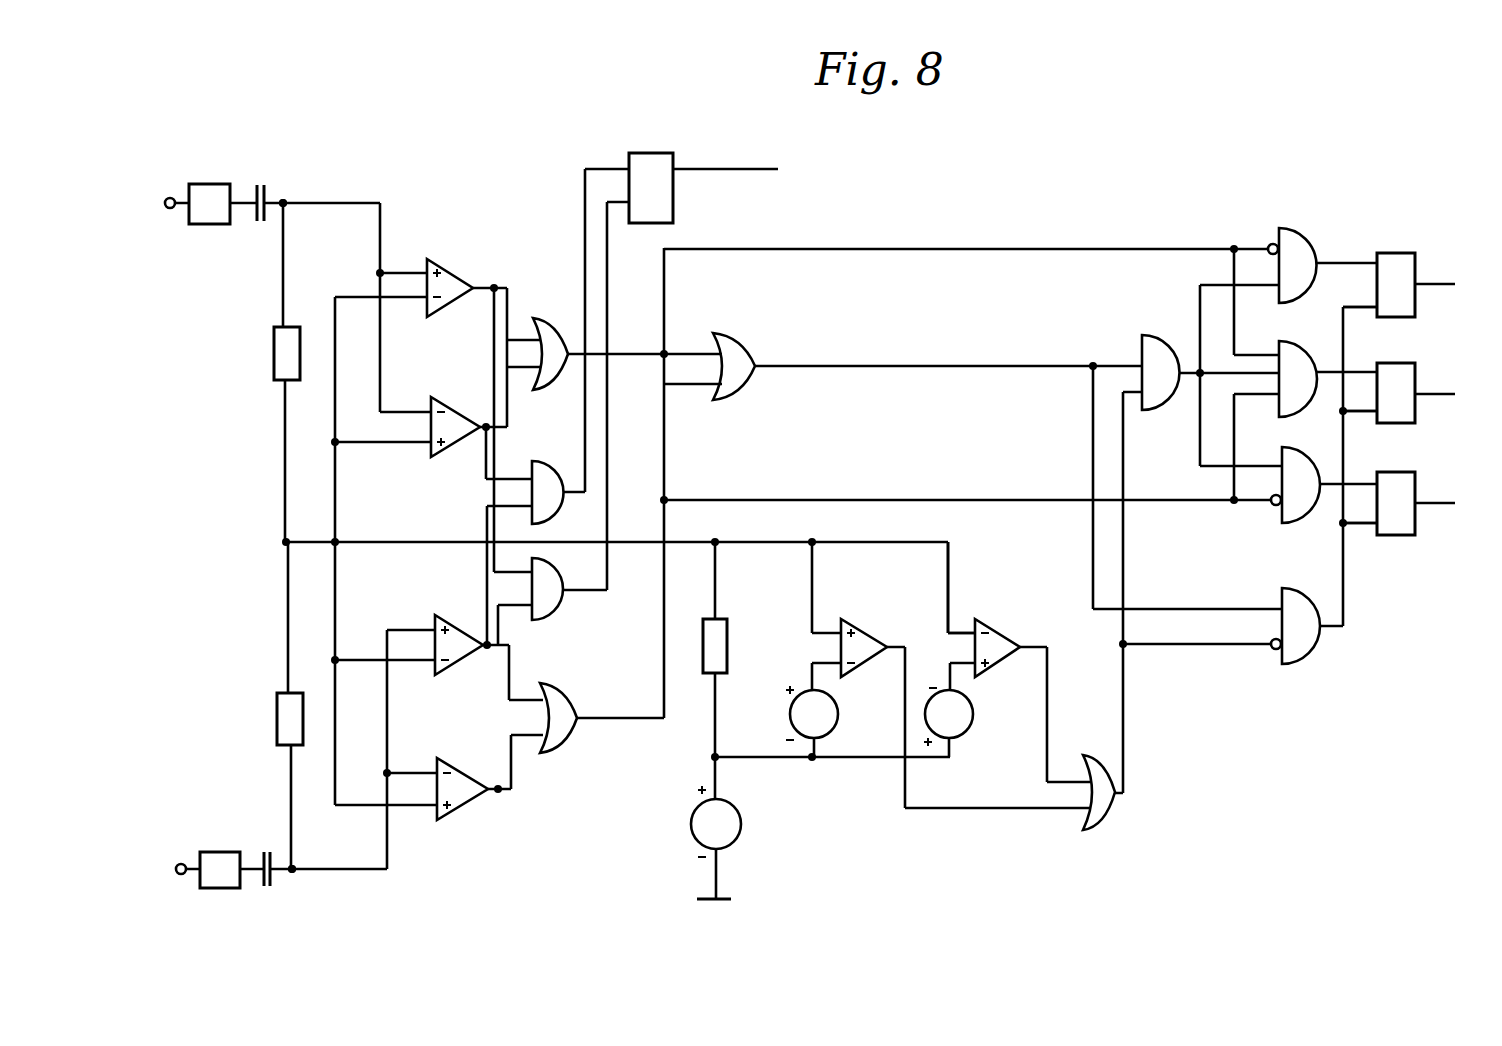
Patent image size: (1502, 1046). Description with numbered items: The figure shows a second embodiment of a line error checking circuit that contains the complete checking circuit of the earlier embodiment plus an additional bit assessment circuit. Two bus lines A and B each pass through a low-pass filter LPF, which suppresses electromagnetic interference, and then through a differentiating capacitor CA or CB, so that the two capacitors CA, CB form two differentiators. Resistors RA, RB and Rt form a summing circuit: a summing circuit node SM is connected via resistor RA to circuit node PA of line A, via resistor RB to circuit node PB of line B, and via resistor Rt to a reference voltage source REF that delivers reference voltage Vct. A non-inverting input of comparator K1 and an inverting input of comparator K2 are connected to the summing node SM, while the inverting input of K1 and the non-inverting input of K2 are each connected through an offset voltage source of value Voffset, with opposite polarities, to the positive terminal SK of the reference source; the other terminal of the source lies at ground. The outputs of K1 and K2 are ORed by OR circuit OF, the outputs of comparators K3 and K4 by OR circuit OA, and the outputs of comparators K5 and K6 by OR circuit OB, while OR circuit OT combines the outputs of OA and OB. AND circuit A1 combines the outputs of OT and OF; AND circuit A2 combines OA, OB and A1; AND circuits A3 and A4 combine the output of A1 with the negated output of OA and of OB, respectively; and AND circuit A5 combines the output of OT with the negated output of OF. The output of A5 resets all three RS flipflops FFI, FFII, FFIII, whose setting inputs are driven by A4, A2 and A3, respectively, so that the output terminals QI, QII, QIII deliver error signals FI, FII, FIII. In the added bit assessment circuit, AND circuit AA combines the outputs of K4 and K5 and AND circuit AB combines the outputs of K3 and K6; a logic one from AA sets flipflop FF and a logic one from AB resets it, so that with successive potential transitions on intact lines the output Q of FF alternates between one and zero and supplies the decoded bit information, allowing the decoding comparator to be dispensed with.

The line A is at (161, 205).
The line B is at (172, 871).
The low-pass filter LPF is at (216, 536).
The capacitor CA is at (252, 189).
The circuit node PA is at (295, 182).
The capacitor CB is at (261, 853).
The circuit node PB is at (297, 889).
The resistor RA is at (261, 353).
The resistor RB is at (265, 719).
The summing circuit node SM is at (604, 582).
The comparator K3 is at (450, 273).
The comparator K4 is at (455, 414).
The comparator K5 is at (459, 632).
The comparator K6 is at (462, 779).
The OR circuit OA is at (545, 335).
The AND circuit AA is at (551, 478).
The AND circuit AB is at (557, 598).
The OR circuit OB is at (558, 737).
The flipflop FF is at (651, 171).
The output Q of flipflop FF Q is at (725, 187).
The OR circuit OT is at (734, 350).
The AND circuit A1 is at (1161, 372).
The AND circuit A2 is at (1298, 379).
The AND circuit A3 is at (1292, 265).
The AND circuit A4 is at (1295, 485).
The AND circuit A5 is at (1295, 626).
The RS flipflop FFIII is at (1396, 267).
The RS flipflop FFII is at (1396, 375).
The RS flipflop FFI is at (1396, 486).
The error signal FIII is at (1455, 285).
The error signal FII is at (1453, 395).
The error signal FI is at (1451, 504).
The output terminal of flipflop FFIII QIII is at (1396, 306).
The output terminal of flipflop FFII QII is at (1394, 416).
The output terminal of flipflop FFI QI is at (1393, 526).
The resistor Rt is at (730, 646).
The comparator K1 is at (864, 633).
The comparator K2 is at (997, 633).
The offset voltage source Voffset is at (877, 716).
The positive terminal of reference voltage source SK is at (815, 758).
The reference voltage Vct is at (739, 821).
The reference voltage source REF is at (684, 855).
The OR circuit OF is at (1086, 815).